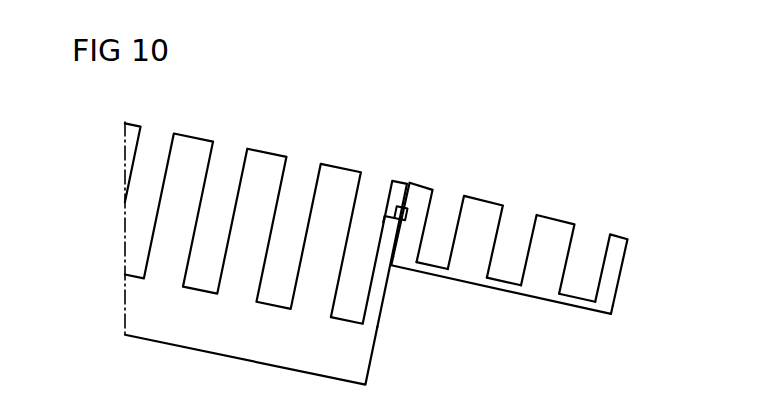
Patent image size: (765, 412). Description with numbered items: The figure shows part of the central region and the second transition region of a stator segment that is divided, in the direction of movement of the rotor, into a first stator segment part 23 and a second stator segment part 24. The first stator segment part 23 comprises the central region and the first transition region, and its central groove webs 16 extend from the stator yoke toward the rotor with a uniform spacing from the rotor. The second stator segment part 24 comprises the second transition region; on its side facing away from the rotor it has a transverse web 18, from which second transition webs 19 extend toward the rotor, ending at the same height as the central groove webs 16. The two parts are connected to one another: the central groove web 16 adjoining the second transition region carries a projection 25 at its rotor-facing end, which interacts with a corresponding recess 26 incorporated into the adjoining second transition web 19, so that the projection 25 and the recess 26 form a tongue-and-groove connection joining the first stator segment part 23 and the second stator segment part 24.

The central groove webs 16 is at (272, 151).
The transverse web 18 is at (497, 289).
The second transition webs 19 is at (497, 202).
The first stator segment part 23 is at (267, 215).
The second stator segment part 24 is at (514, 223).
The projection 25 is at (401, 207).
The recess 26 is at (410, 217).